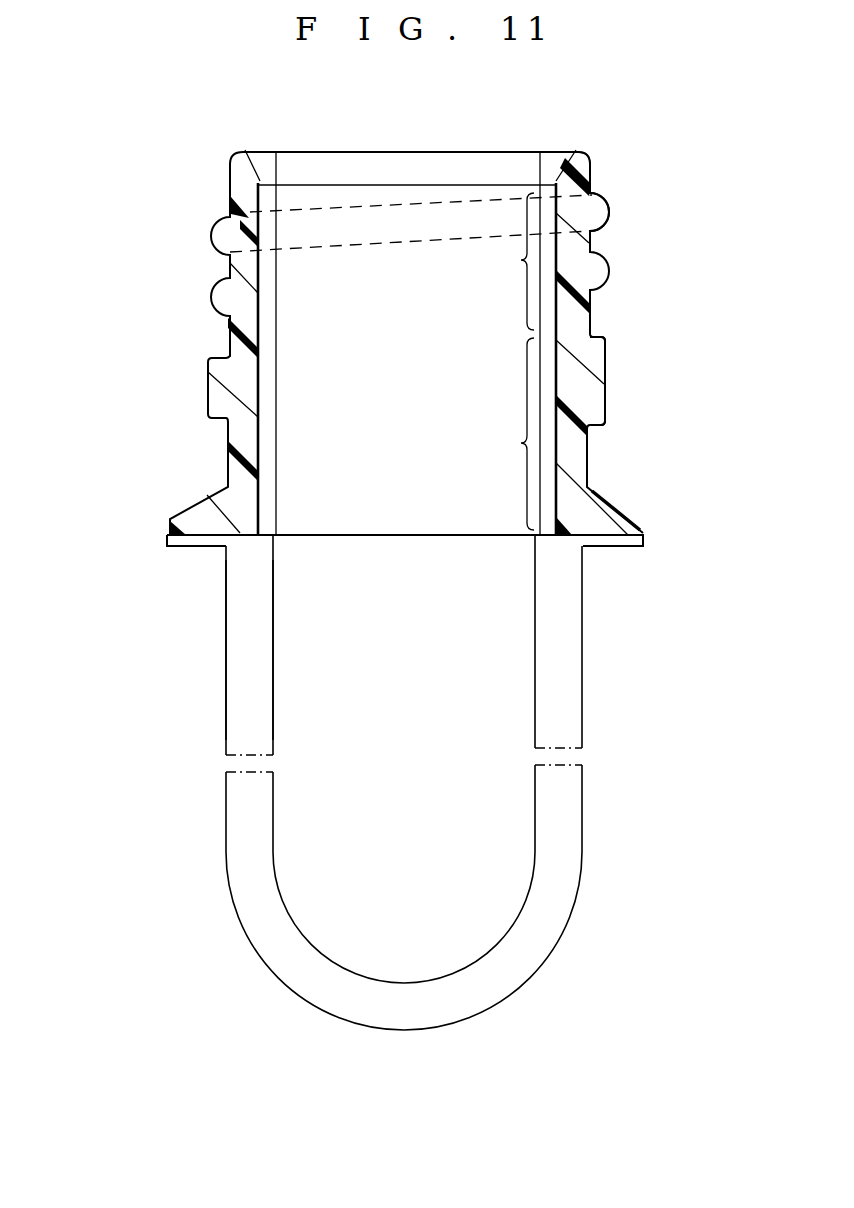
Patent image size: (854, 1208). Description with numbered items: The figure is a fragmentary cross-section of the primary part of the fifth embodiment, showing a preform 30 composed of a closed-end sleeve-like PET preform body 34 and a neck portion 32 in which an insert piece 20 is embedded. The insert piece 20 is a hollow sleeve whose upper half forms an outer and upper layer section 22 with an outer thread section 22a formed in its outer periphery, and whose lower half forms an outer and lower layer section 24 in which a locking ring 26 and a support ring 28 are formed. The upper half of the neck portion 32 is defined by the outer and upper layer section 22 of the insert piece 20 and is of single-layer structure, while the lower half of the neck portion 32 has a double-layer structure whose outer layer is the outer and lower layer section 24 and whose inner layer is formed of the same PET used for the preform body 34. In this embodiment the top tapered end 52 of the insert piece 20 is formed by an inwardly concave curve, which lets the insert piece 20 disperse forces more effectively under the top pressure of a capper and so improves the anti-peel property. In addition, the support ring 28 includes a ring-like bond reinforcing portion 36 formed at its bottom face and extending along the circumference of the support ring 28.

The insert piece 20 is at (204, 480).
The outer and upper layer section 22 is at (512, 273).
The outer thread section 22a is at (607, 211).
The outer and lower layer section 24 is at (510, 460).
The locking ring 26 is at (597, 367).
The support ring 28 is at (628, 528).
The preform 30 is at (667, 692).
The neck portion 32 is at (267, 323).
The preform body 34 is at (256, 644).
The bond reinforcing portion 36 is at (623, 549).
The top tapered end 52 is at (590, 190).